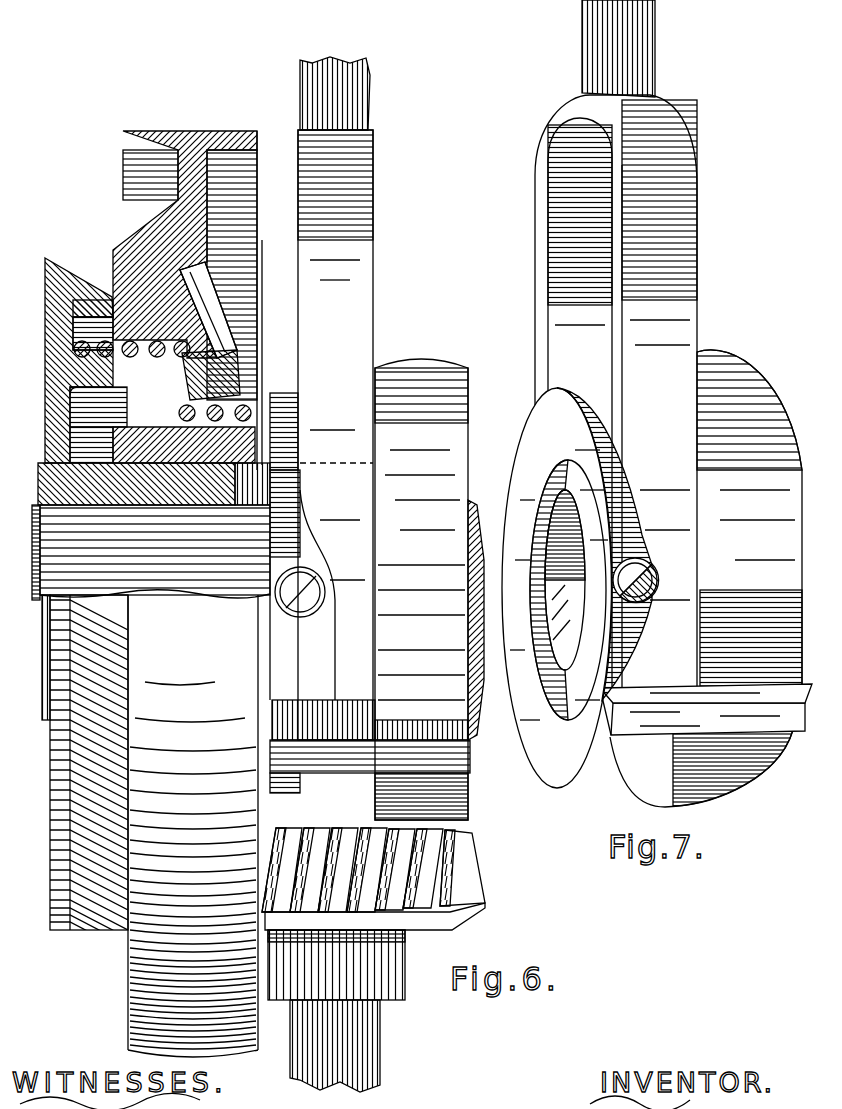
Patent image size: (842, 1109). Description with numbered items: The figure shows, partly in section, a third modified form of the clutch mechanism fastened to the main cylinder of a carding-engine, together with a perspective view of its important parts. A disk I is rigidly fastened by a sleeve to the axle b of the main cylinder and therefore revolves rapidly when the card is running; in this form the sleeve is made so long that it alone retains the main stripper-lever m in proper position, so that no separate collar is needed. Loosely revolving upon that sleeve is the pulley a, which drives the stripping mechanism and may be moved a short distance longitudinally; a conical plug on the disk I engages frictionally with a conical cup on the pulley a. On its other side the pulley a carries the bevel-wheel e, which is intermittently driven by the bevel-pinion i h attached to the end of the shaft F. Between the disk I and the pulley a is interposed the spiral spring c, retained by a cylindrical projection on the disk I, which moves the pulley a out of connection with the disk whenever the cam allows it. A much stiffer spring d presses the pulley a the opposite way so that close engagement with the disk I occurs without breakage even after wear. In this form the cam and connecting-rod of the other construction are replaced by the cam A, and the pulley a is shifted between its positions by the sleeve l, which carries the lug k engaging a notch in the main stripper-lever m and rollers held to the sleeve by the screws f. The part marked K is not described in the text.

In FIG. 6, the cam A is at (372, 264).
In FIG. 7, the cam A is at (690, 270).
In FIG. 6, the pulley a is at (125, 148).
In FIG. 6, the axle of the main cylinder b is at (42, 550).
In FIG. 6, the spiral spring c is at (62, 352).
In FIG. 6, the spring d is at (248, 405).
In FIG. 6, the bevel-wheel e is at (228, 330).
In FIG. 6, the screws f is at (300, 592).
In FIG. 7, the screws f is at (636, 580).
In FIG. 6, the bevel-pinion h is at (462, 866).
In FIG. 6, the bevel-pinion i is at (405, 967).
In FIG. 7, the lug k is at (706, 709).
In FIG. 6, the yoke block K is at (322, 775).
In FIG. 6, the sleeve l is at (290, 405).
In FIG. 7, the sleeve l is at (582, 792).
In FIG. 6, the main stripper-lever m is at (460, 457).
In FIG. 7, the main stripper-lever m is at (706, 578).
In FIG. 6, the disk I is at (58, 262).
In FIG. 6, the shaft F is at (380, 1032).